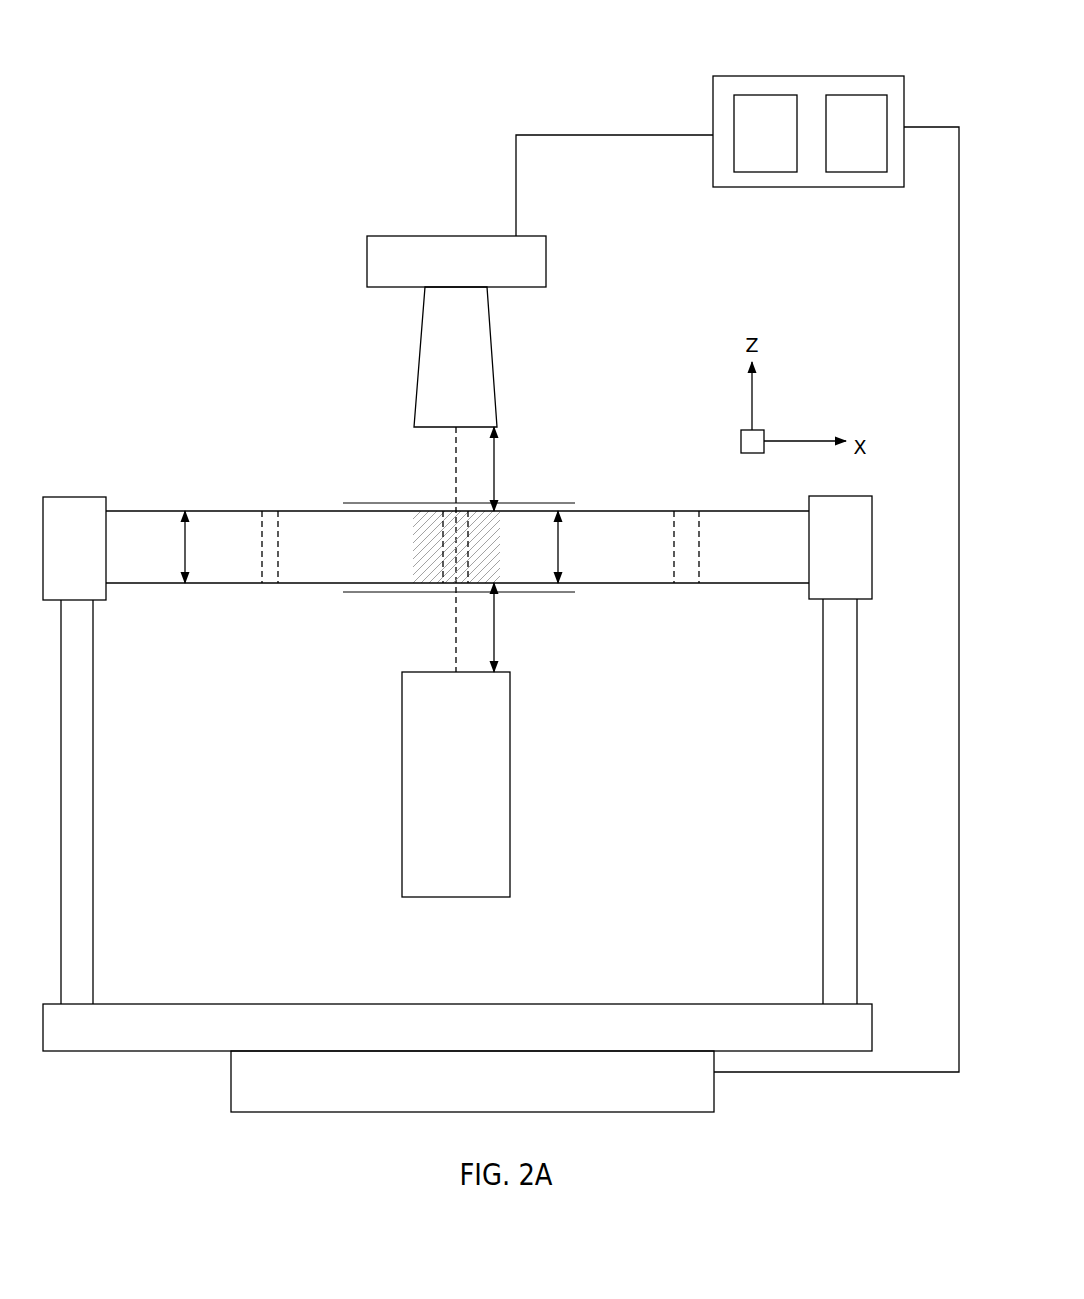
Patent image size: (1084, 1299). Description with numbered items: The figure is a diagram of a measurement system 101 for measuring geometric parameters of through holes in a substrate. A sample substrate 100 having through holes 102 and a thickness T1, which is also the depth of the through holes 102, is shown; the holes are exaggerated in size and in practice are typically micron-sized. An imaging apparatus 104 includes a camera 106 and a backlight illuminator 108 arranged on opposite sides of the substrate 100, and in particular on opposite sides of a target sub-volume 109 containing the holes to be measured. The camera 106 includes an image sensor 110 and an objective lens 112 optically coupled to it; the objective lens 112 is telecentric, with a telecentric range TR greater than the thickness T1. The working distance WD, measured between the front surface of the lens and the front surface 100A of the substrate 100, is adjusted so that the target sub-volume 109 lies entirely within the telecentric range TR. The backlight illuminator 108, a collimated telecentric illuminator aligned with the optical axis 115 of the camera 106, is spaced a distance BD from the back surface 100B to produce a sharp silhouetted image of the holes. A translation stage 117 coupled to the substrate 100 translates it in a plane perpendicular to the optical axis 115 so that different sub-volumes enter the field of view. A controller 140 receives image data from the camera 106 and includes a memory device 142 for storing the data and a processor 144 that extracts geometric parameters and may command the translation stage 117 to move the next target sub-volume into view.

The measurement system 101 is at (411, 178).
The imaging apparatus 104 is at (464, 228).
The camera 106 is at (548, 267).
The image sensor 110 is at (379, 262).
The objective lens 112 is at (487, 358).
The optical axis 115 is at (450, 462).
The through holes 102 is at (268, 578).
The target sub-volume 109 is at (428, 565).
The substrate 100 is at (725, 520).
The front surface 100A is at (228, 510).
The back surface 100B is at (218, 585).
The backlight illuminator 108 is at (512, 783).
The translation stage 117 is at (655, 1101).
The controller 140 is at (800, 75).
The memory device 142 is at (772, 157).
The processor 144 is at (850, 158).
The thickness T1 is at (201, 547).
The working distance WD is at (516, 469).
The distance of backlight illuminator BD is at (512, 627).
The telecentric range TR is at (491, 513).